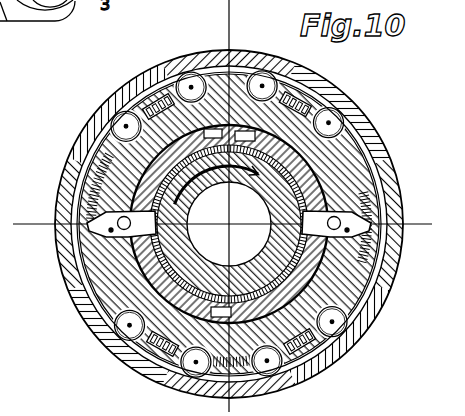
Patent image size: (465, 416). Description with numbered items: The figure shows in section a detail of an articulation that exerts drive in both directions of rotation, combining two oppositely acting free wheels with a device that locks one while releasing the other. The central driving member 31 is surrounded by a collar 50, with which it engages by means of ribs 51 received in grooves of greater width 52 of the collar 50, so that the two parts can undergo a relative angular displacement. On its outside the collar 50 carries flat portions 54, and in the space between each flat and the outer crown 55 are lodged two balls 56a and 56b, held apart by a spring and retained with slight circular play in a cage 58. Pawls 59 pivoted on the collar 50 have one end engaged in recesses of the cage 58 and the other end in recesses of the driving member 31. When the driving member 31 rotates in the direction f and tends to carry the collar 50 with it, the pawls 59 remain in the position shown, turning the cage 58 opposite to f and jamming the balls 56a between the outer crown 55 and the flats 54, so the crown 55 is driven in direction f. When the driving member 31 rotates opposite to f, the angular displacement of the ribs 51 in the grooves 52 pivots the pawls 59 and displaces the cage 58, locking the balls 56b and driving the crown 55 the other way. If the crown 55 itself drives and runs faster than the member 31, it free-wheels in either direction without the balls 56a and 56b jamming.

The driving member 31 is at (235, 150).
The collar 50 is at (339, 175).
The ribs 51 is at (309, 273).
The grooves 52 is at (339, 213).
The flat portions 54 is at (309, 100).
The outer crown 55 is at (80, 298).
The balls 56a is at (124, 126).
The balls 56b is at (190, 87).
The cage 58 is at (100, 173).
The pawls 59 is at (88, 238).
The direction of rotation f is at (226, 164).